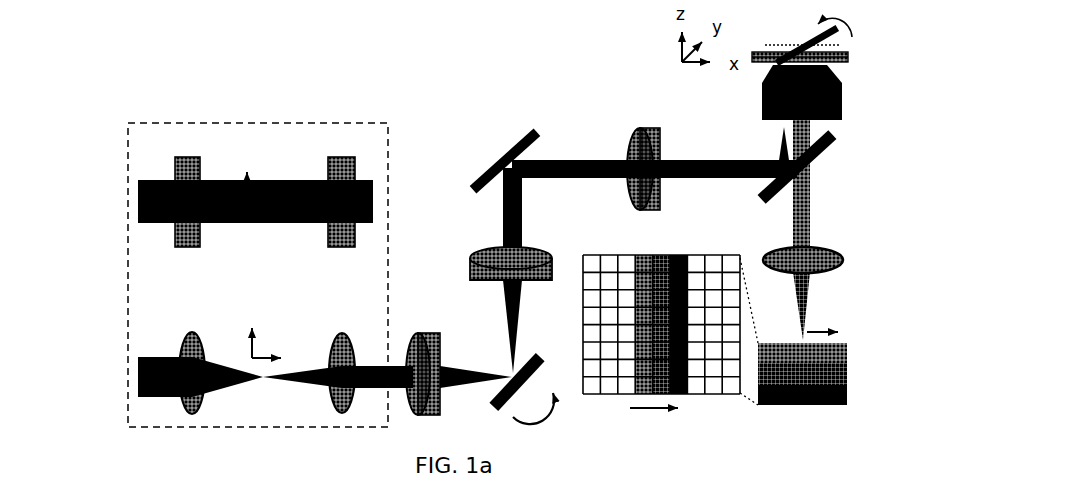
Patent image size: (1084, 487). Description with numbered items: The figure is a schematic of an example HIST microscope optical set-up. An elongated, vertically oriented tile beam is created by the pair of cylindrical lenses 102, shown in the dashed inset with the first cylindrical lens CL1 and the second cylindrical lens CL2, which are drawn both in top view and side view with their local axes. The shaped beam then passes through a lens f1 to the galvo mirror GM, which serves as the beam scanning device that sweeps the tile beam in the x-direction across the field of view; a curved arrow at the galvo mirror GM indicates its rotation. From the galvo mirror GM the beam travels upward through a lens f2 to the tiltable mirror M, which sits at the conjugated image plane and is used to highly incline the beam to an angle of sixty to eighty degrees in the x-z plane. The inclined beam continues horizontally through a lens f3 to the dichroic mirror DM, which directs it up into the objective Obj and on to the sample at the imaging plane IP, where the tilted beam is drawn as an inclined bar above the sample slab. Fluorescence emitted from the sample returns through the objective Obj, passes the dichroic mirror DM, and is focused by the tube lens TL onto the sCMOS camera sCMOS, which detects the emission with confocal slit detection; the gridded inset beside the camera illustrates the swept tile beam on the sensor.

The pair of cylindrical lenses 102 is at (100, 226).
The cylindrical lens CL1 is at (185, 285).
The cylindrical lens CL2 is at (345, 285).
The lens f1 is at (459, 353).
The lens f2 is at (500, 270).
The lens f3 is at (643, 148).
The tiltable mirror M is at (633, 149).
The galvo mirror GM is at (508, 379).
The dichroic mirror DM is at (837, 165).
The objective Obj is at (840, 156).
The imaging plane IP is at (828, 42).
The tube lens TL is at (831, 292).
The sCMOS camera sCMOS is at (854, 368).